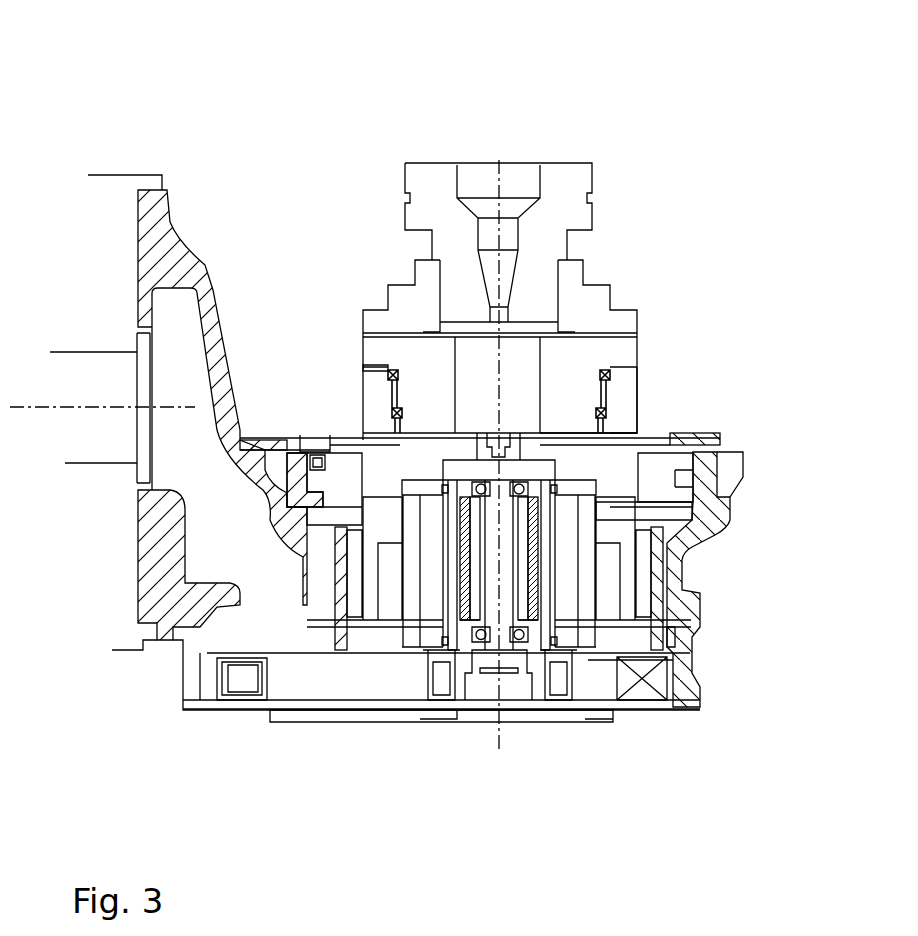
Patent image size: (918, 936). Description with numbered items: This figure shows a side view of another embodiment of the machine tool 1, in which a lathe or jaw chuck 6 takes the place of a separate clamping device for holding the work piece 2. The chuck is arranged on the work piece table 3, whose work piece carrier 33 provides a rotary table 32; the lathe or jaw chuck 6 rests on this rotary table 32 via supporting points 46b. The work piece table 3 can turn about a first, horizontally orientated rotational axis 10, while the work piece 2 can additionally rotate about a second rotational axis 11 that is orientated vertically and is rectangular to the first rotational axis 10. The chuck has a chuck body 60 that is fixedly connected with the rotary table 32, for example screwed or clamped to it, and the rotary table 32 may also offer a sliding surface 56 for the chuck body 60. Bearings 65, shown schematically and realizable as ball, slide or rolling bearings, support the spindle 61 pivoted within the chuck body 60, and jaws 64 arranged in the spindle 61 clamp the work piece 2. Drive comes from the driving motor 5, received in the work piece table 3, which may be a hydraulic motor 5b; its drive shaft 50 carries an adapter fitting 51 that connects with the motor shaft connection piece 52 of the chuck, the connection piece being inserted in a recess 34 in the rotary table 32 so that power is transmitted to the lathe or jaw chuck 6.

The machine tool 1 is at (302, 155).
The work piece 2 is at (430, 163).
The work piece table 3 is at (677, 592).
The driving motor 5 is at (402, 610).
The hydraulic motor 5b is at (567, 600).
The lathe or jaw chuck 6 is at (656, 241).
The first rotational axis 10 is at (62, 415).
The second rotational axis 11 is at (495, 745).
The rotary table 32 is at (680, 437).
The work piece carrier 33 is at (290, 462).
The recess 34 is at (597, 427).
The supporting points 46b is at (370, 436).
The drive shaft 50 is at (508, 568).
The adapter fitting 51 is at (450, 462).
The motor shaft connection piece 52 is at (445, 430).
The sliding surface 56 is at (380, 367).
The chuck body 60 is at (627, 423).
The spindle 61 is at (582, 353).
The jaws 64 is at (570, 277).
The bearings 65 is at (393, 410).